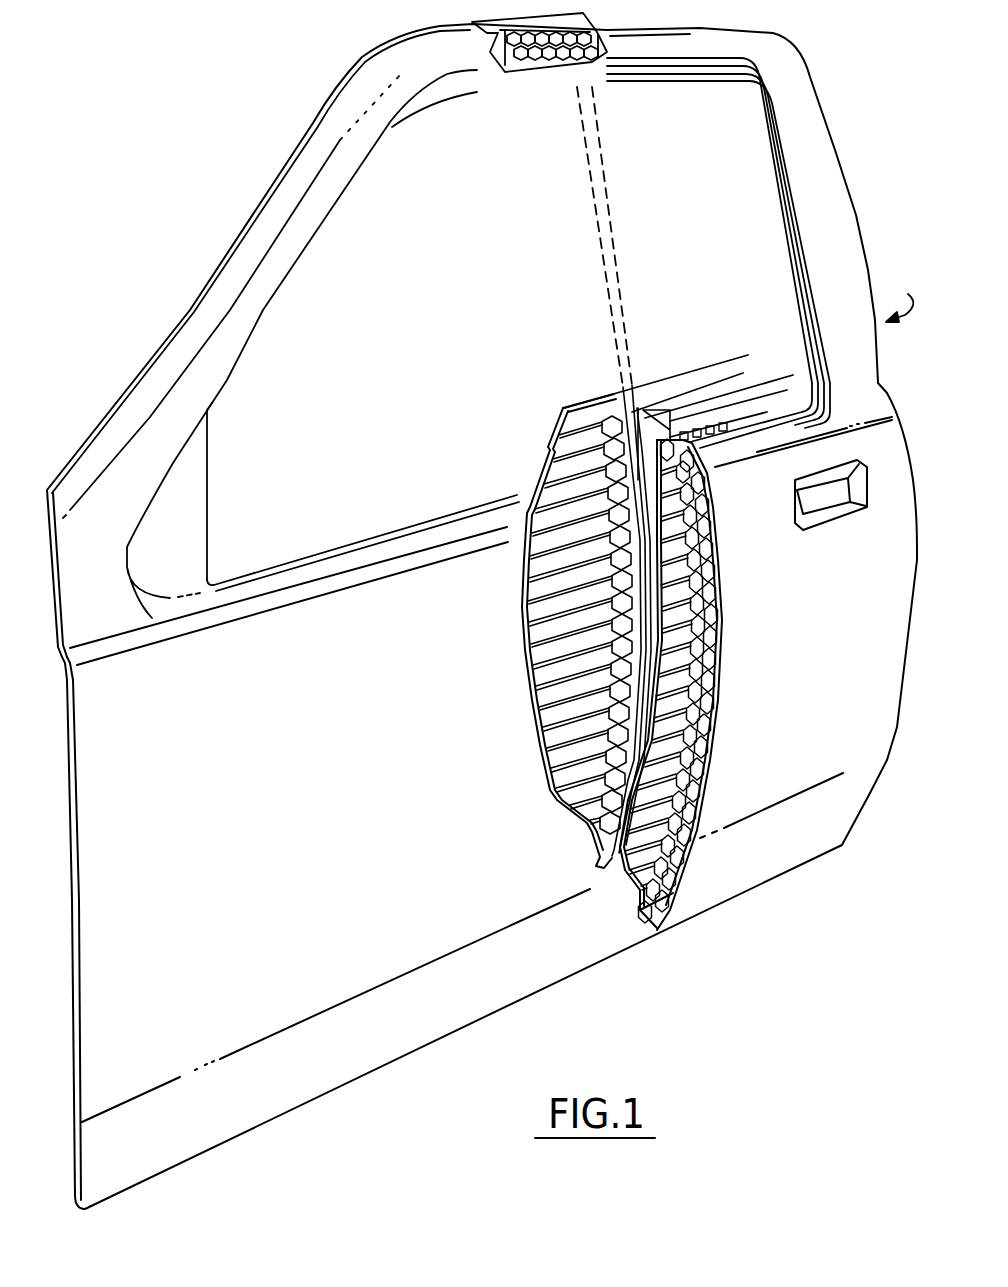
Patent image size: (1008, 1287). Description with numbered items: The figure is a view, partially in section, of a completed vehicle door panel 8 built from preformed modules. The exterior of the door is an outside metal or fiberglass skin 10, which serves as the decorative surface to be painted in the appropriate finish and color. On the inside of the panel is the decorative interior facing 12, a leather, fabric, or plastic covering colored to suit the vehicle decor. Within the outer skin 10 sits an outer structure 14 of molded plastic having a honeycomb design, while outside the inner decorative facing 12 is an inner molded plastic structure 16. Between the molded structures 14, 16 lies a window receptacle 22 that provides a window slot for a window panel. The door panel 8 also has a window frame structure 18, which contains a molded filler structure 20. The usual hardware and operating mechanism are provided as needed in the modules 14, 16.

The vehicle door panel 8 is at (899, 301).
The outside skin 10 is at (733, 875).
The decorative interior facing 12 is at (548, 453).
The outer structure 14 is at (678, 637).
The inner molded plastic structure 16 is at (565, 603).
The window frame structure 18 is at (825, 158).
The molded filler structure 20 is at (555, 57).
The window receptacle 22 is at (712, 542).